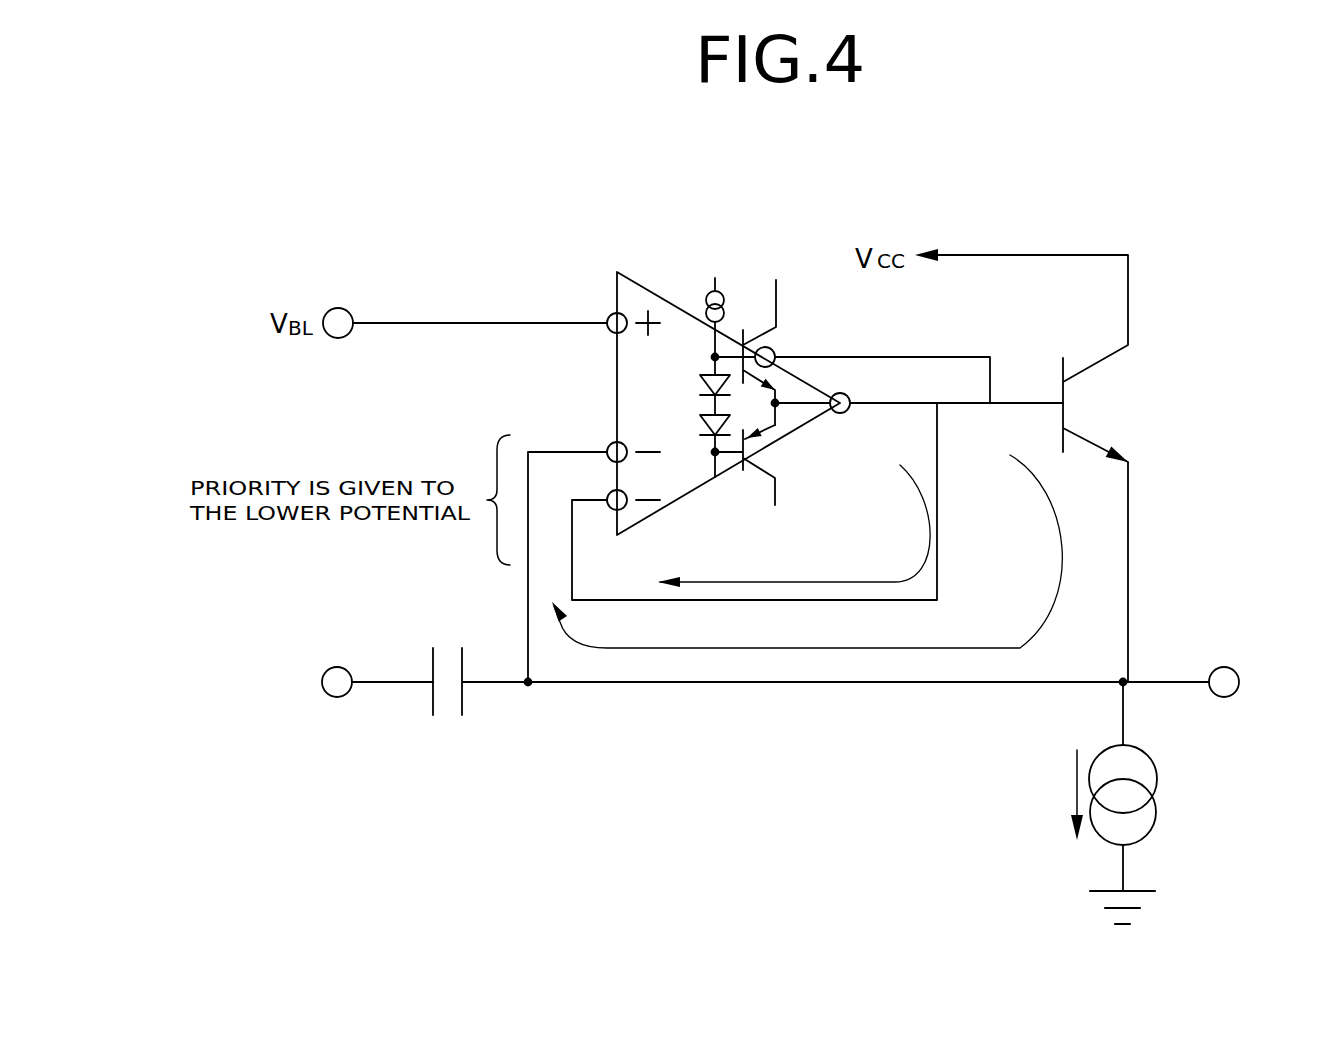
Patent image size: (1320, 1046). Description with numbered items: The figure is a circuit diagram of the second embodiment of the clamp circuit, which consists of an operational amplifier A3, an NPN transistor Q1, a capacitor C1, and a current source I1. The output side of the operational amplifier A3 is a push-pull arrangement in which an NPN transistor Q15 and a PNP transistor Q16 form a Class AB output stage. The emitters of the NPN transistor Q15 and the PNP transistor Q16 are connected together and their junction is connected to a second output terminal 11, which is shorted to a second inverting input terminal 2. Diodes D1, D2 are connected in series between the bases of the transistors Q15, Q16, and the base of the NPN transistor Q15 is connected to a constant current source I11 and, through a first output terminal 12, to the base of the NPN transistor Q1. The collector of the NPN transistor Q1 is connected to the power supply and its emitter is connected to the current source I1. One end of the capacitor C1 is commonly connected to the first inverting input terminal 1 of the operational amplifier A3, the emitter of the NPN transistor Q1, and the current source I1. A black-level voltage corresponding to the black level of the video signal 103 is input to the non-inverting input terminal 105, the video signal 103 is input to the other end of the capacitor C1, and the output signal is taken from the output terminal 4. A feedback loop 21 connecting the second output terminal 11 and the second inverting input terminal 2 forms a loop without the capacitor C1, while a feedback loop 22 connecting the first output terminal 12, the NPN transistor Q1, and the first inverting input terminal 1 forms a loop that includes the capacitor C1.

The non-inverting input terminal 105 is at (610, 310).
The first inverting input terminal 1 is at (610, 441).
The second inverting input terminal 2 is at (606, 511).
The second output terminal 11 is at (852, 403).
The first output terminal 12 is at (777, 350).
The feedback loop 21 is at (754, 501).
The feedback loop 22 is at (807, 541).
The video signal 103 is at (291, 688).
The output terminal 4 is at (1222, 698).
The operational amplifier A3 is at (728, 403).
The diode D1 is at (705, 380).
The diode D2 is at (703, 418).
The NPN transistor Q15 is at (755, 340).
The PNP transistor Q16 is at (765, 460).
The NPN transistor Q1 is at (1080, 402).
The capacitor C1 is at (463, 663).
The current source I1 is at (1098, 803).
The constant current source I11 is at (707, 302).